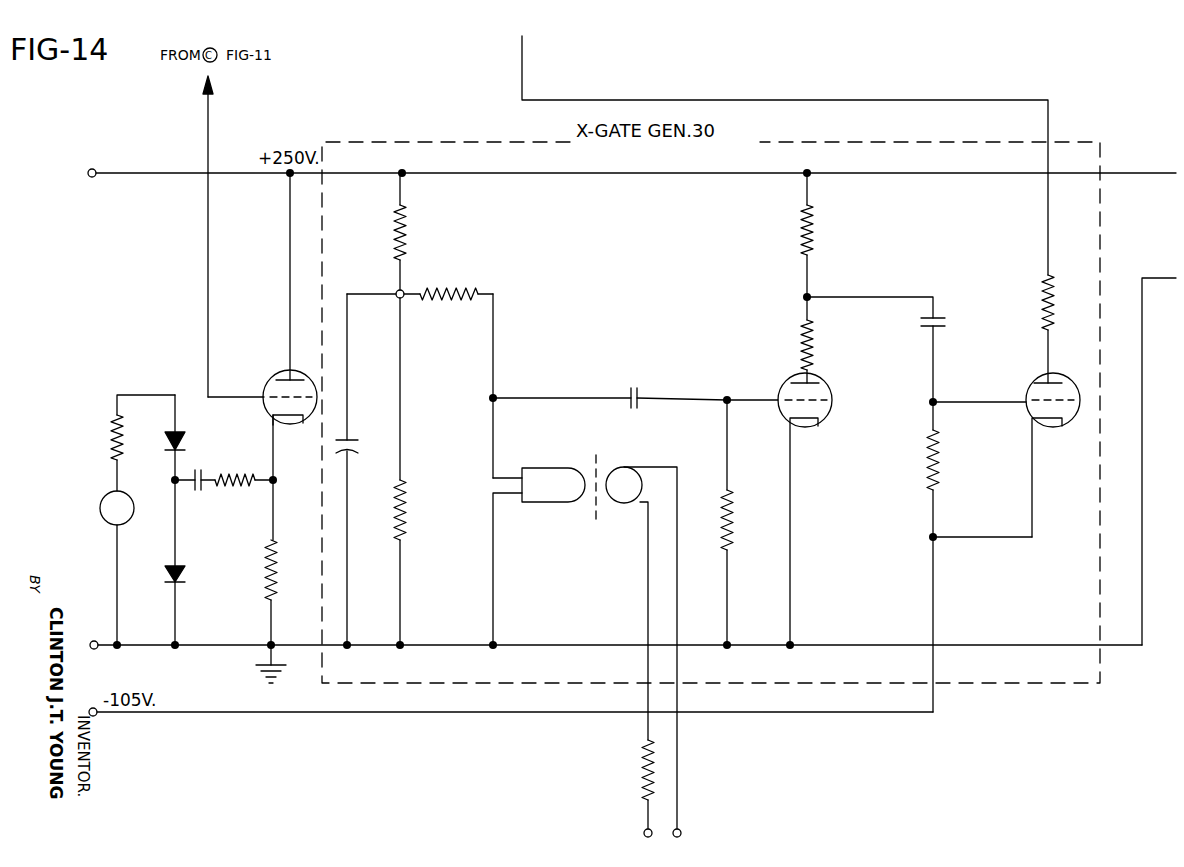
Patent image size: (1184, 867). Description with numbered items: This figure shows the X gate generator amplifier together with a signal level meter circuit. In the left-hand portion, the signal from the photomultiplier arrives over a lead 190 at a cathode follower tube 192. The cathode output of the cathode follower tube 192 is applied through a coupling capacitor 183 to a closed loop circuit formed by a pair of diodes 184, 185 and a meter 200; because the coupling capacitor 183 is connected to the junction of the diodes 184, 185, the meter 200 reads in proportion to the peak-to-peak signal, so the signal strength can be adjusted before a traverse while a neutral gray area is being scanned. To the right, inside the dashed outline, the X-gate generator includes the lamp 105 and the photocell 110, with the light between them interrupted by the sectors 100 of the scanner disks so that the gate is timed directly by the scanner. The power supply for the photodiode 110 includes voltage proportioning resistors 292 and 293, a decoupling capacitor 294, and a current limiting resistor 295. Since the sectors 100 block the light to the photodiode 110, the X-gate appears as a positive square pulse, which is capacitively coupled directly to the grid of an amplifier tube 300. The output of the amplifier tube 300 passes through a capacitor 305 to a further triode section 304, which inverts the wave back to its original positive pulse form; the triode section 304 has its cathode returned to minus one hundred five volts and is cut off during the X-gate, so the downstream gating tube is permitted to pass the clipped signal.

The lead 190 is at (208, 100).
The cathode follower tube 192 is at (270, 378).
The meter 200 is at (104, 499).
The diode 184 is at (184, 438).
The coupling capacitor 183 is at (198, 492).
The diode 185 is at (186, 574).
The voltage proportioning resistor 292 is at (408, 212).
The current limiting resistor 295 is at (444, 290).
The decoupling capacitor 294 is at (374, 423).
The voltage proportioning resistor 293 is at (408, 500).
The photocell 110 is at (546, 496).
The sectors 100 is at (596, 452).
The lamp 105 is at (626, 470).
The amplifier tube 300 is at (808, 428).
The capacitor 305 is at (948, 322).
The triode section 304 is at (1048, 428).